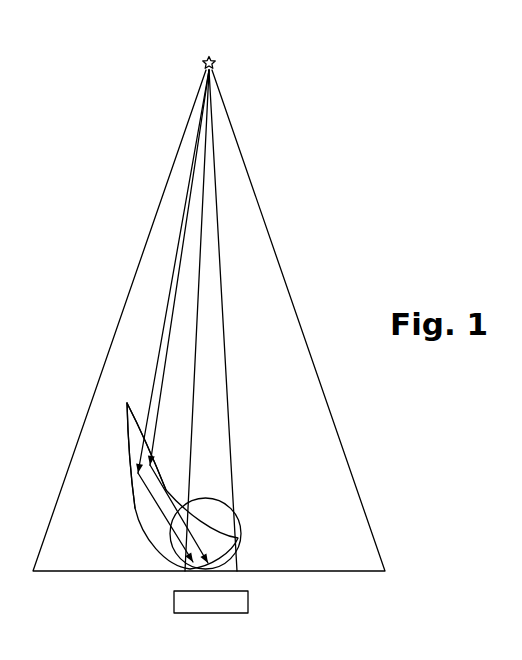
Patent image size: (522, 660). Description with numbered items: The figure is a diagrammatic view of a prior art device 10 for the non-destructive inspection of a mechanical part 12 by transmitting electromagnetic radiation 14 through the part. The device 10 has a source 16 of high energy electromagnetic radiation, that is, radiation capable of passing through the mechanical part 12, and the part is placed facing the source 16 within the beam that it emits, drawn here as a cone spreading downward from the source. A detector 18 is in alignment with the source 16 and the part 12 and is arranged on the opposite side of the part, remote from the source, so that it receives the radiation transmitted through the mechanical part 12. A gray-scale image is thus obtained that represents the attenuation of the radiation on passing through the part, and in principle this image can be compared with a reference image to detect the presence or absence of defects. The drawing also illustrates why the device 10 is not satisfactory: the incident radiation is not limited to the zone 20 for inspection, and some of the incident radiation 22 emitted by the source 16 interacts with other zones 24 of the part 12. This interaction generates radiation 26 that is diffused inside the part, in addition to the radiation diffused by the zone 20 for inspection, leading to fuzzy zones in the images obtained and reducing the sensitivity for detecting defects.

The device 10 is at (330, 243).
The mechanical part 12 is at (140, 537).
The electromagnetic radiation 14 is at (217, 222).
The source 16 is at (215, 63).
The detector 18 is at (248, 602).
The zone for inspection 20 is at (213, 523).
The incident radiation 22 is at (162, 327).
The other zones 24 is at (133, 481).
The diffused radiation 26 is at (163, 490).